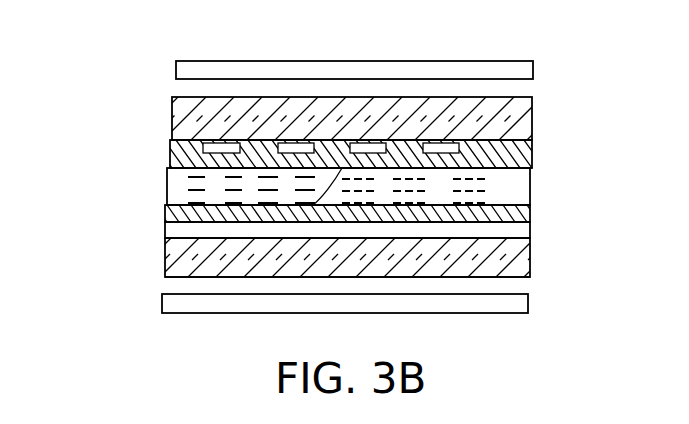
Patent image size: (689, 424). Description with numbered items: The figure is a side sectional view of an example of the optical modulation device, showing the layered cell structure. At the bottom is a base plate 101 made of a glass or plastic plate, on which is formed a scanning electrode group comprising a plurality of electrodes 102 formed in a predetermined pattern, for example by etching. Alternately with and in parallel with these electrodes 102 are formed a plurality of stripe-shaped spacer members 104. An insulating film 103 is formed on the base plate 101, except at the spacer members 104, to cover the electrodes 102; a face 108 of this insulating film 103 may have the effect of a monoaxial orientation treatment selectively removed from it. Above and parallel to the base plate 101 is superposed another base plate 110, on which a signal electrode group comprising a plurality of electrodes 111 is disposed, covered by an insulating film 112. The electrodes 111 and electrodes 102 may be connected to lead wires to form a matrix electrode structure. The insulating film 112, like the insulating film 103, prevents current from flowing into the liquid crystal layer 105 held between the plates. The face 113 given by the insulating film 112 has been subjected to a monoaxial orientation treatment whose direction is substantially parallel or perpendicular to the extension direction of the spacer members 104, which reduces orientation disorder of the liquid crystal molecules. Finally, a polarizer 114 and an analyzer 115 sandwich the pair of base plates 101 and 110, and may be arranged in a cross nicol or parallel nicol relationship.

The base plate 101 is at (530, 267).
The electrodes 102 is at (532, 237).
The insulating film 103 is at (532, 222).
The spacer members 104 is at (532, 209).
The liquid crystal layer 105 is at (197, 187).
The face of the insulating film 108 is at (175, 204).
The base plate 110 is at (532, 116).
The electrodes 111 is at (442, 147).
The insulating film 112 is at (532, 155).
The face 113 is at (533, 178).
The polarizer 114 is at (533, 72).
The analyzer 115 is at (528, 308).